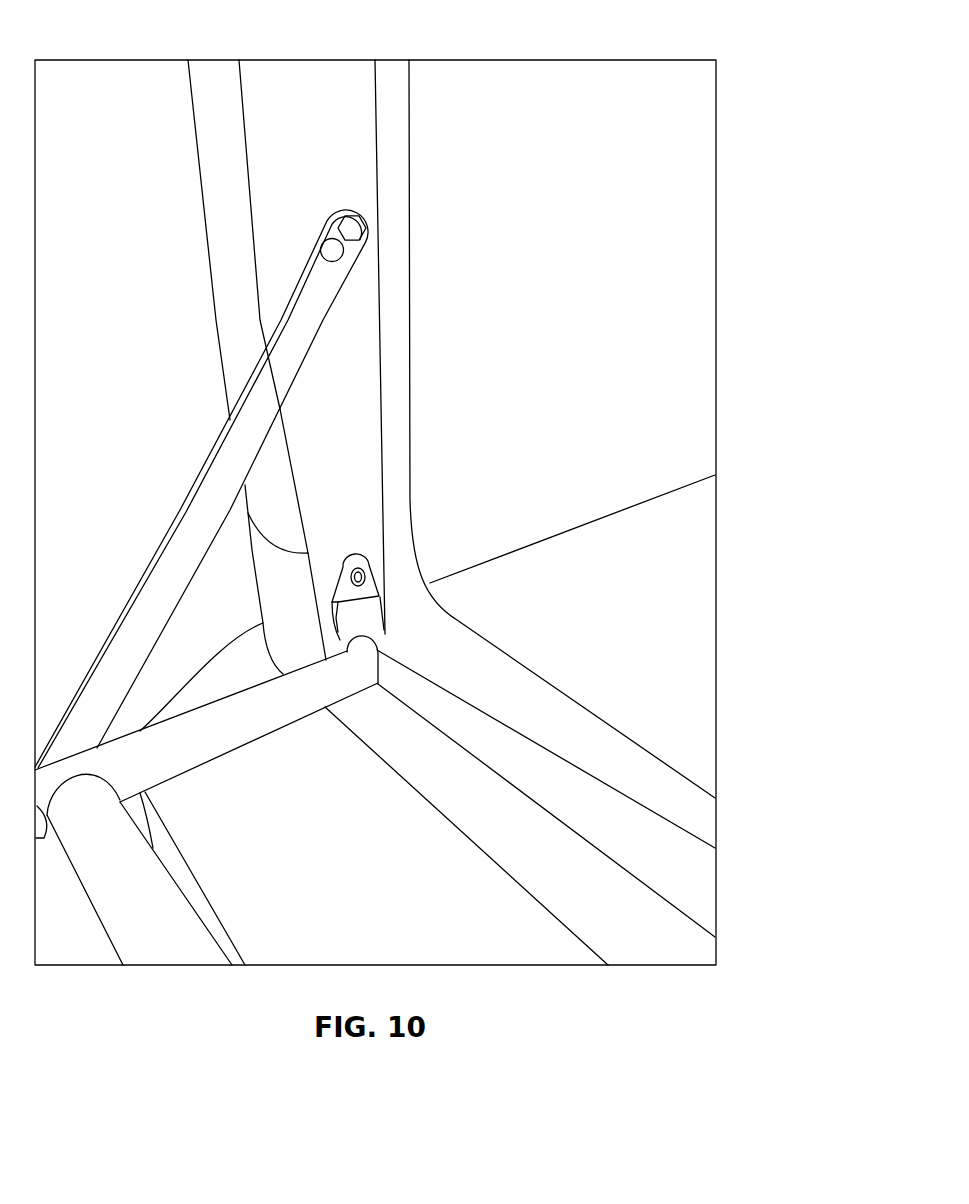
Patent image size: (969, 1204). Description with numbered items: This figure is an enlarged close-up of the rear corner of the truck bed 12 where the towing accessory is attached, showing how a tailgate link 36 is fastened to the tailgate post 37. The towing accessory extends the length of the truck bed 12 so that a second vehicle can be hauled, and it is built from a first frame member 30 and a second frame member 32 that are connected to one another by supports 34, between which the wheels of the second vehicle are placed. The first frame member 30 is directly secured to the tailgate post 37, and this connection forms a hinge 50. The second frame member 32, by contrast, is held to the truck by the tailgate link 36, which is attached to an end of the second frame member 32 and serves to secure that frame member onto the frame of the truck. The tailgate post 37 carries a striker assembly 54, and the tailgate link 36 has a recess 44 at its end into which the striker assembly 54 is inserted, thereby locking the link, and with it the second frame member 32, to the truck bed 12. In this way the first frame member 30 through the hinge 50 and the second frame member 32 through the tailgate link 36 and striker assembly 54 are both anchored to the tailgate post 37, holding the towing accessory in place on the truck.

The truck bed 12 is at (553, 103).
The first frame member 30 is at (568, 780).
The second frame member 32 is at (120, 903).
The support 34 is at (152, 752).
The tailgate link 36 is at (218, 494).
The tailgate post 37 is at (263, 207).
The recess 44 is at (330, 248).
The hinge 50 is at (372, 613).
The striker assembly 54 is at (346, 214).